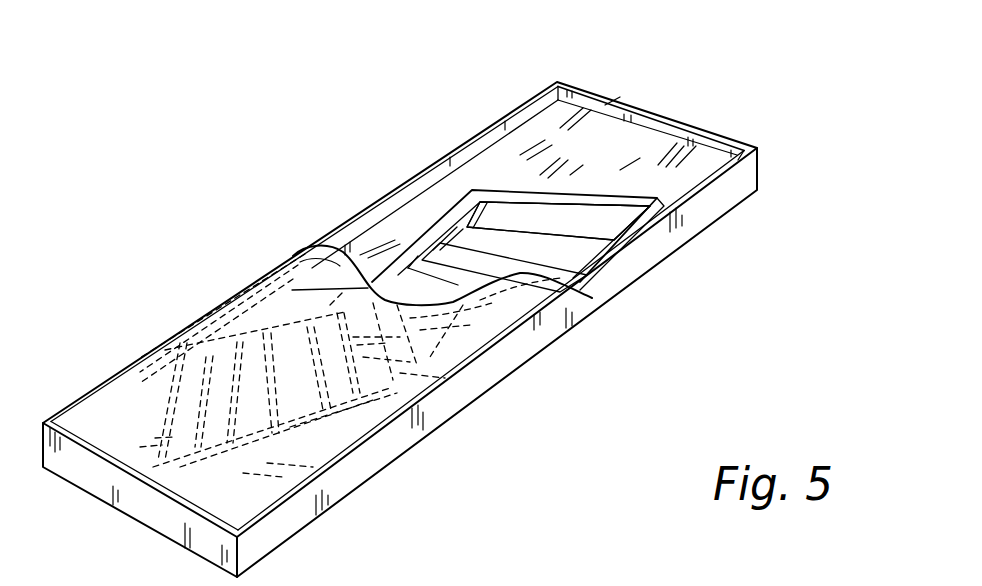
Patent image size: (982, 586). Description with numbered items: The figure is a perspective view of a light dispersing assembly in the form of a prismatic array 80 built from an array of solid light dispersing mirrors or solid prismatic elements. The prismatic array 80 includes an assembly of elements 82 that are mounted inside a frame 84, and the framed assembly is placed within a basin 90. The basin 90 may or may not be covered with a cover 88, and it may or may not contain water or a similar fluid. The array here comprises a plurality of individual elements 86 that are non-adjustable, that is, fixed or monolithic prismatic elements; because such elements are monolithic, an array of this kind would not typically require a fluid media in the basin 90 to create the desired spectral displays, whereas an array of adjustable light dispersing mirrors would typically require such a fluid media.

The prismatic array 80 is at (206, 71).
The assembly of elements 82 is at (478, 185).
The frame 84 is at (664, 197).
The individual elements 86 is at (517, 256).
The cover 88 is at (197, 318).
The basin 90 is at (530, 357).